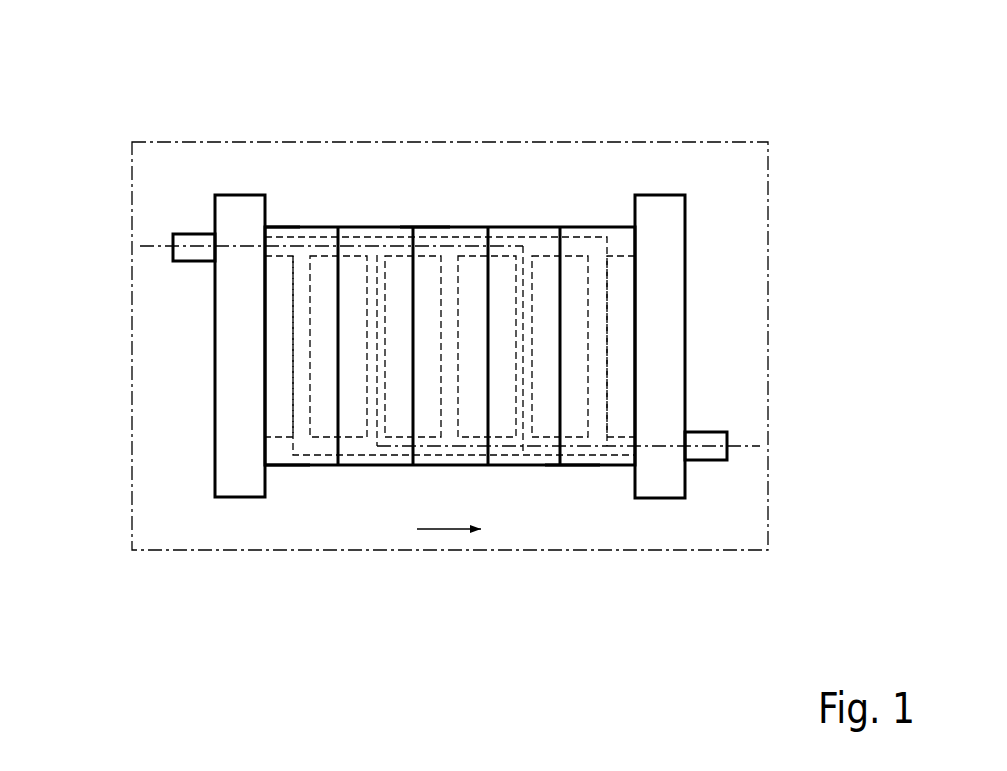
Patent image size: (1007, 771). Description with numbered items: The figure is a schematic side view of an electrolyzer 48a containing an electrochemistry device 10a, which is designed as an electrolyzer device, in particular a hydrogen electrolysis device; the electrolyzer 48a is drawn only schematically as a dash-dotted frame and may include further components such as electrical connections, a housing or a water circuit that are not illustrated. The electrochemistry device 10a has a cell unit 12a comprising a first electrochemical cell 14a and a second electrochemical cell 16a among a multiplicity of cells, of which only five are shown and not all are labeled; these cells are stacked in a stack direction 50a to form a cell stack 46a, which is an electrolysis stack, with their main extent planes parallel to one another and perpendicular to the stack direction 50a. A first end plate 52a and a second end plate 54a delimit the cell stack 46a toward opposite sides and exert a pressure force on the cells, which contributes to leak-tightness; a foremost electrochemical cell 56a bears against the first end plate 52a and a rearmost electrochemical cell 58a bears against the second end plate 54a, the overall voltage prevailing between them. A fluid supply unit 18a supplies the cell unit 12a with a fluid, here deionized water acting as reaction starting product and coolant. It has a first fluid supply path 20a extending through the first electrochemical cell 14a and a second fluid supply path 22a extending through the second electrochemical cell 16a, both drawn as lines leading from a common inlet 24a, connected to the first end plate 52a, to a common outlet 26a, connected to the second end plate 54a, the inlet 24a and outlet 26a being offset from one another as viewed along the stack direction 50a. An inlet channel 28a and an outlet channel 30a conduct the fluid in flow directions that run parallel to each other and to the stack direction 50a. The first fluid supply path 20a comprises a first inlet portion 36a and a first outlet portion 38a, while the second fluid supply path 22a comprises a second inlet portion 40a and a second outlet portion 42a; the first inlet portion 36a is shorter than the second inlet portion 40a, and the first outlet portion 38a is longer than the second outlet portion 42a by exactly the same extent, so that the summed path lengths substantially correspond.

The electrochemistry device 10a is at (395, 177).
The cell unit 12a is at (528, 200).
The first electrochemical cell 14a is at (377, 466).
The second electrochemical cell 16a is at (525, 467).
The fluid supply unit 18a is at (287, 283).
The first fluid supply path 20a is at (377, 343).
The second fluid supply path 22a is at (523, 307).
The inlet 24a is at (188, 230).
The outlet 26a is at (707, 462).
The inlet channel 28a is at (320, 240).
The outlet channel 30a is at (613, 462).
The first inlet portion 36a is at (274, 227).
The first outlet portion 38a is at (425, 468).
The second inlet portion 40a is at (425, 227).
The second outlet portion 42a is at (571, 468).
The cell stack 46a is at (289, 468).
The electrolyzer 48a is at (672, 142).
The stack direction 50a is at (500, 621).
The first end plate 52a is at (238, 448).
The second end plate 54a is at (662, 360).
The foremost electrochemical cell 56a is at (303, 468).
The rearmost electrochemical cell 58a is at (598, 467).